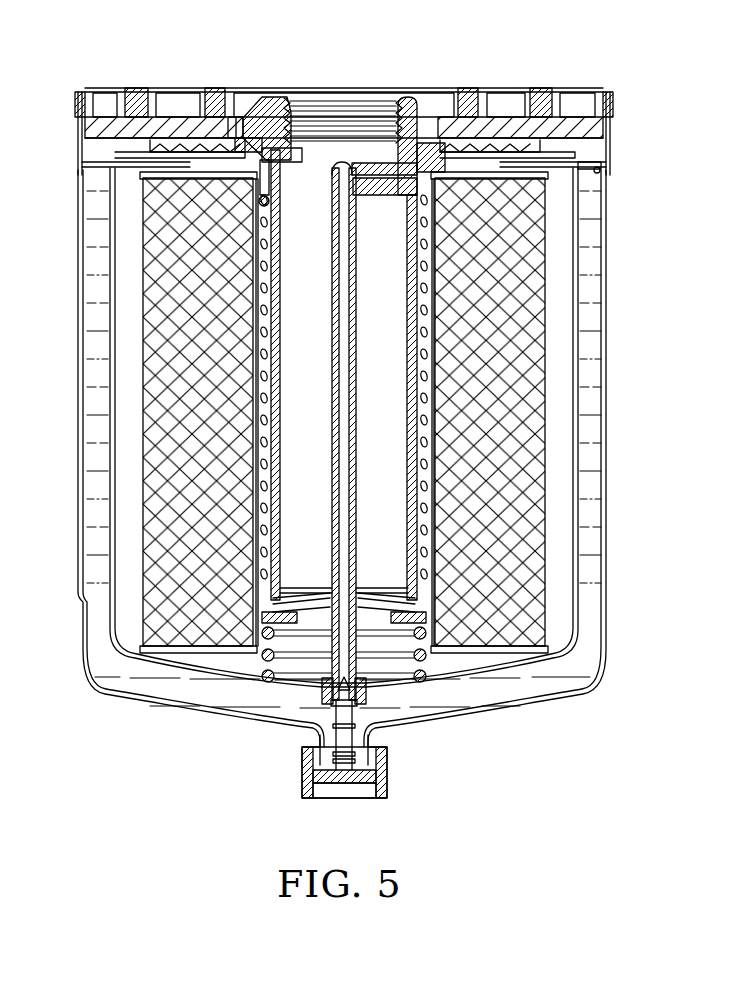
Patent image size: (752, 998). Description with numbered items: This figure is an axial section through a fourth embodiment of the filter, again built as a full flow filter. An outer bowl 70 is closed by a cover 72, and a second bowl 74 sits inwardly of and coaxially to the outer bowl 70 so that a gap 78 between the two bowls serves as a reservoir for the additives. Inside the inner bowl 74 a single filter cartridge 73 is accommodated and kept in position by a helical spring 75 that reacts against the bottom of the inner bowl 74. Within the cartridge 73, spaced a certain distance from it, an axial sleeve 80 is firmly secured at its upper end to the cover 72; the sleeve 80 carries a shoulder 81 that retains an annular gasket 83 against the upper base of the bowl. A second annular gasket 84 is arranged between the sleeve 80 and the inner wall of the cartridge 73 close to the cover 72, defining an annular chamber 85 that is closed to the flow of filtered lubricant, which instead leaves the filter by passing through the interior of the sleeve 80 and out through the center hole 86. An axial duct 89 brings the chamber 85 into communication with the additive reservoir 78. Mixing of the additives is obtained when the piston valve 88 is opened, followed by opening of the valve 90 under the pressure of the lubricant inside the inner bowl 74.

The outer bowl 70 is at (324, 484).
The cover 72 is at (331, 105).
The filter cartridge 73 is at (525, 408).
The second bowl 74 is at (110, 294).
The helical spring 75 is at (425, 652).
The gap 78 is at (90, 462).
The axial sleeve 80 is at (412, 330).
The shoulder 81 is at (246, 140).
The annular gasket 83 is at (228, 122).
The second annular gasket 84 is at (270, 195).
The annular chamber 85 is at (268, 186).
The center hole 86 is at (298, 103).
The piston valve 88 is at (348, 694).
The axial duct 89 is at (355, 370).
The valve 90 is at (599, 174).